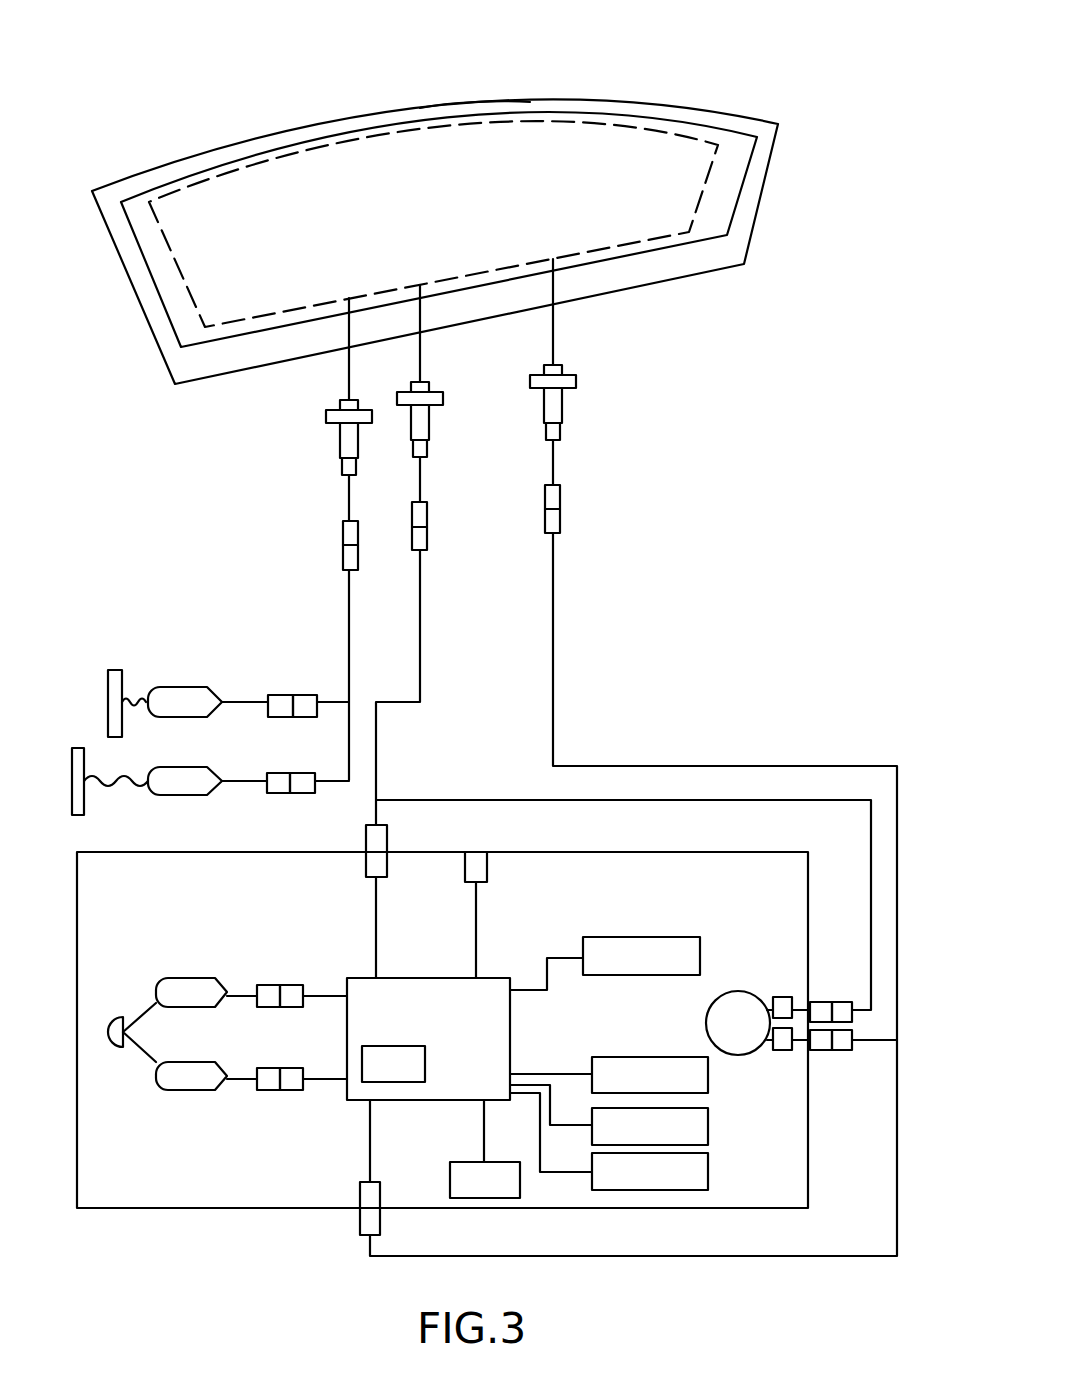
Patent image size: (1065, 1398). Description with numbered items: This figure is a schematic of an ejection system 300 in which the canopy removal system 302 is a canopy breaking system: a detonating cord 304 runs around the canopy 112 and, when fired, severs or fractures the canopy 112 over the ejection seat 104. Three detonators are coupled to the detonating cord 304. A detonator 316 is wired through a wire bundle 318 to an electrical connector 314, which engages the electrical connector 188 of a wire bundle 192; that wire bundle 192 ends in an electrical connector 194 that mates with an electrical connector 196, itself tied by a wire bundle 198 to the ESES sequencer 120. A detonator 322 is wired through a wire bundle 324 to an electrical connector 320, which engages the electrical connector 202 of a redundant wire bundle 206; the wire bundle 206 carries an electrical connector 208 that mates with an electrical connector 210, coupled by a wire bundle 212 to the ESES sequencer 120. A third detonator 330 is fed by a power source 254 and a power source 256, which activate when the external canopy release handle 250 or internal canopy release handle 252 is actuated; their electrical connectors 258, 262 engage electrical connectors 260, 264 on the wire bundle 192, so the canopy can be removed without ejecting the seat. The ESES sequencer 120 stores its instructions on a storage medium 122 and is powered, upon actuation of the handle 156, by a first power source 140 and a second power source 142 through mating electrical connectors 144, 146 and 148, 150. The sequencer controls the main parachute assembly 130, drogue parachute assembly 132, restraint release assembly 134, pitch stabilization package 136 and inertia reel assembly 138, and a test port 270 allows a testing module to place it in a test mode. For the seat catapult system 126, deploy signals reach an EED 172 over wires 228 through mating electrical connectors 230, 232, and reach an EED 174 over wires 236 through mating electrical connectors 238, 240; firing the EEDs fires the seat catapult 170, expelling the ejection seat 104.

The ejection system 300 is at (90, 79).
The canopy removal system 302 is at (210, 132).
The detonating cord 304 is at (590, 138).
The canopy 112 is at (485, 120).
The detonator 330 is at (342, 440).
The wire bundle 318 is at (419, 488).
The detonator 316 is at (418, 424).
The electrical connector 314 is at (420, 522).
The electrical connector 188 is at (421, 538).
The detonator 322 is at (558, 405).
The wire bundle 324 is at (556, 455).
The electrical connector 320 is at (558, 495).
The electrical connector 202 is at (558, 523).
The external canopy release handle 250 is at (118, 678).
The internal canopy release handle 252 is at (80, 752).
The power source 254 is at (178, 695).
The power source 256 is at (190, 790).
The electrical connector 258 is at (278, 700).
The electrical connector 260 is at (306, 700).
The electrical connector 262 is at (275, 786).
The electrical connector 264 is at (307, 788).
The wire bundle 192 is at (400, 698).
The wire 228 is at (434, 796).
The electrical connector 194 is at (380, 835).
The electrical connector 196 is at (380, 870).
The wire bundle 198 is at (372, 907).
The test port 270 is at (482, 870).
The wire bundle 206 is at (557, 680).
The ejection seat 104 is at (147, 901).
The handle 156 is at (108, 1032).
The second power source 142 is at (197, 990).
The first power source 140 is at (190, 1080).
The electrical connector 144 is at (263, 988).
The electrical connector 146 is at (297, 988).
The electrical connector 148 is at (264, 1080).
The electrical connector 150 is at (296, 1080).
The ESES sequencer 120 is at (447, 1037).
The computer-readable storage medium 122 is at (408, 1075).
The main parachute assembly 130 is at (650, 970).
The drogue parachute assembly 132 is at (658, 1088).
The restraint release assembly 134 is at (658, 1141).
The pitch stabilization package 136 is at (663, 1185).
The inertia reel assembly 138 is at (499, 1191).
The wire bundle 212 is at (370, 1153).
The electrical connector 210 is at (366, 1193).
The electrical connector 208 is at (366, 1226).
The seat catapult system 126 is at (748, 975).
The seat catapult 170 is at (752, 1033).
The EED 172 is at (782, 1000).
The EED 174 is at (783, 1045).
The electrical connector 232 is at (820, 1005).
The electrical connector 230 is at (845, 1008).
The electrical connector 240 is at (818, 1043).
The electrical connector 238 is at (845, 1045).
The wire 236 is at (873, 1042).